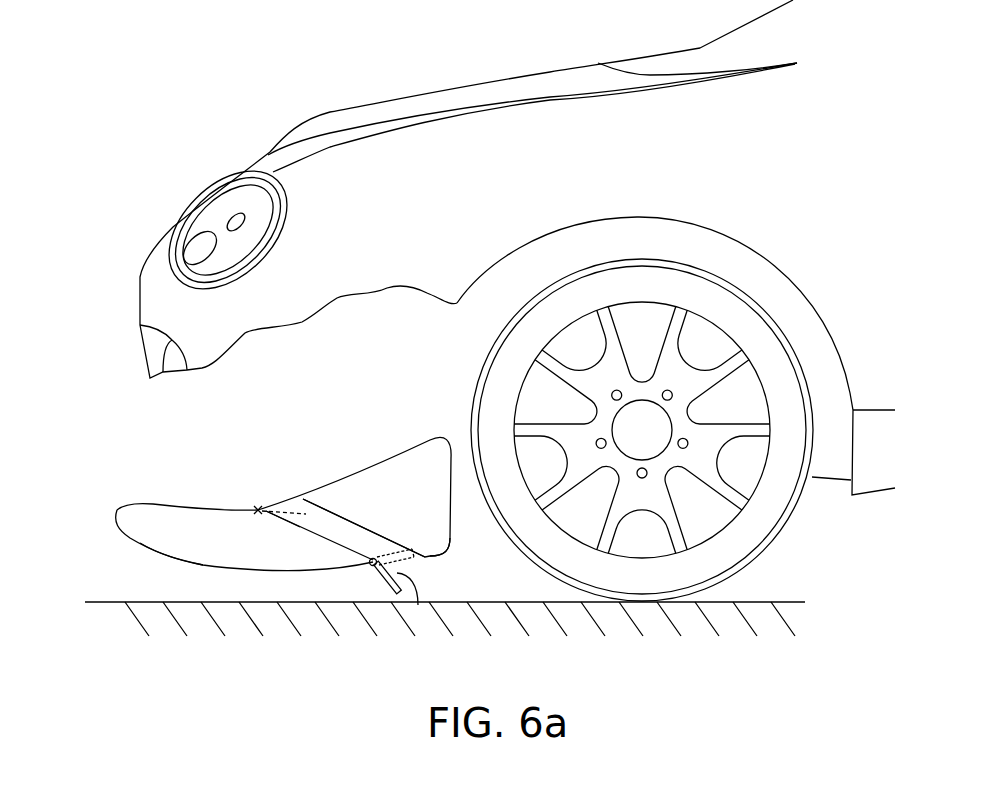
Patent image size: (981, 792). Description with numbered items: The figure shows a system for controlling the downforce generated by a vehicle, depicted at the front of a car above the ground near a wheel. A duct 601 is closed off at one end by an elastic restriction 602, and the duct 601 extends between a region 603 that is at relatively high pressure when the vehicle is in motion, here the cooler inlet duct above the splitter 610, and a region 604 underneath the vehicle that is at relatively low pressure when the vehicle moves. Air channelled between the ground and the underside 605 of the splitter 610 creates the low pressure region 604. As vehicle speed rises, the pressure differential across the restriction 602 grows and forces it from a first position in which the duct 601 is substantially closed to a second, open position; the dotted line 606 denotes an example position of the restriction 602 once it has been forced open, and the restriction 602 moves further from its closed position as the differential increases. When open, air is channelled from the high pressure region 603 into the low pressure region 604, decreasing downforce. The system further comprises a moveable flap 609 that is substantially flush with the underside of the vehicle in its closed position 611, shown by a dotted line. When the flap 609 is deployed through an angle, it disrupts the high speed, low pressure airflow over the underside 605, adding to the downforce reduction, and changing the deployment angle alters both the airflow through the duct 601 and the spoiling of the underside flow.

The duct 601 is at (342, 527).
The elastic restriction 602 is at (258, 510).
The high pressure region 603 is at (204, 473).
The low pressure region underneath the vehicle 604 is at (469, 585).
The underside of the splitter 605 is at (160, 557).
The dotted line 606 is at (278, 515).
The moveable flap 609 is at (400, 593).
The splitter 610 is at (117, 513).
The closed position 611 is at (393, 556).